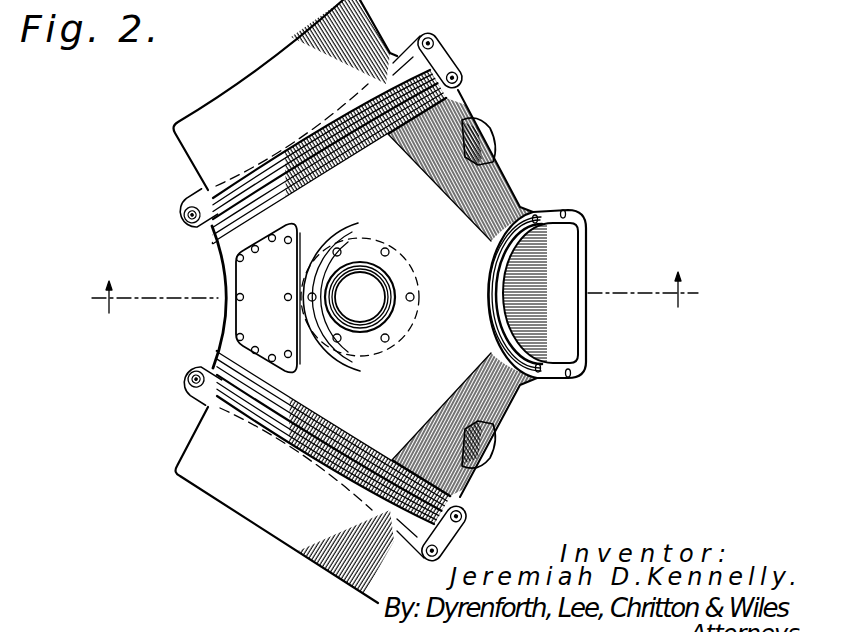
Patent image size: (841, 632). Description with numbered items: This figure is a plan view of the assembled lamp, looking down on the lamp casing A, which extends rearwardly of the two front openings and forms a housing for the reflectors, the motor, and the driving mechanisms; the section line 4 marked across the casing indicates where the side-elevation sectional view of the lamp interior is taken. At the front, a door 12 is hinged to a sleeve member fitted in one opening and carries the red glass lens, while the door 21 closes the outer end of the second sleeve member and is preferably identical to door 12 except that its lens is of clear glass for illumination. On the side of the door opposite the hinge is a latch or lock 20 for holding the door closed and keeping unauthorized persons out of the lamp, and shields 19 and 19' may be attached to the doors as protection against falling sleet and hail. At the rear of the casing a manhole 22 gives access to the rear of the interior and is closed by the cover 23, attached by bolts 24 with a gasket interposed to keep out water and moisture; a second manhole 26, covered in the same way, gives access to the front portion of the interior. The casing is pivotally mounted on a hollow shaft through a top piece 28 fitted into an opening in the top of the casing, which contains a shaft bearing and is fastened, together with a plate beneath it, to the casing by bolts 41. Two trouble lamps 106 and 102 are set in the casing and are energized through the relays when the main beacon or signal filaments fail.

The shield 19' is at (271, 95).
The shield 19 is at (259, 505).
The latch or lock 20 is at (448, 56).
The door 21 is at (203, 193).
The door 12 is at (207, 405).
The lamp casing A is at (494, 178).
The trouble lamp 106 is at (495, 132).
The trouble lamp 102 is at (498, 446).
The manhole 26 is at (233, 272).
The top piece 28 is at (365, 312).
The bolts 41 is at (394, 252).
The manhole 22 is at (572, 213).
The cover 23 is at (565, 317).
The bolts 24 is at (573, 372).
The section line 4- 4 is at (390, 294).